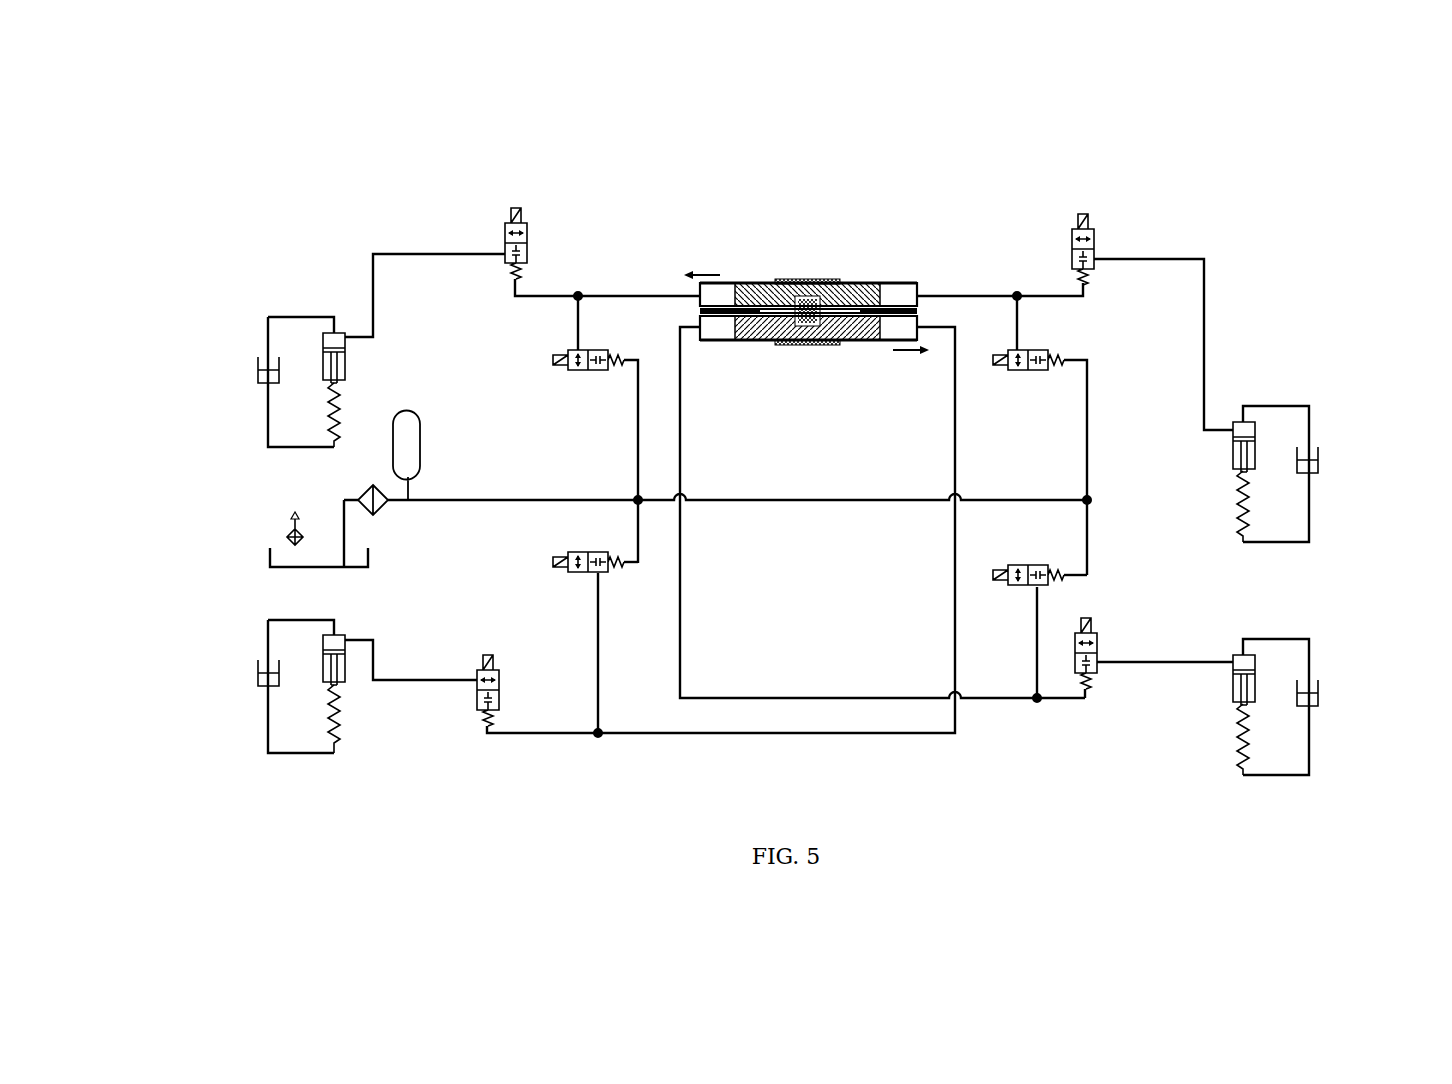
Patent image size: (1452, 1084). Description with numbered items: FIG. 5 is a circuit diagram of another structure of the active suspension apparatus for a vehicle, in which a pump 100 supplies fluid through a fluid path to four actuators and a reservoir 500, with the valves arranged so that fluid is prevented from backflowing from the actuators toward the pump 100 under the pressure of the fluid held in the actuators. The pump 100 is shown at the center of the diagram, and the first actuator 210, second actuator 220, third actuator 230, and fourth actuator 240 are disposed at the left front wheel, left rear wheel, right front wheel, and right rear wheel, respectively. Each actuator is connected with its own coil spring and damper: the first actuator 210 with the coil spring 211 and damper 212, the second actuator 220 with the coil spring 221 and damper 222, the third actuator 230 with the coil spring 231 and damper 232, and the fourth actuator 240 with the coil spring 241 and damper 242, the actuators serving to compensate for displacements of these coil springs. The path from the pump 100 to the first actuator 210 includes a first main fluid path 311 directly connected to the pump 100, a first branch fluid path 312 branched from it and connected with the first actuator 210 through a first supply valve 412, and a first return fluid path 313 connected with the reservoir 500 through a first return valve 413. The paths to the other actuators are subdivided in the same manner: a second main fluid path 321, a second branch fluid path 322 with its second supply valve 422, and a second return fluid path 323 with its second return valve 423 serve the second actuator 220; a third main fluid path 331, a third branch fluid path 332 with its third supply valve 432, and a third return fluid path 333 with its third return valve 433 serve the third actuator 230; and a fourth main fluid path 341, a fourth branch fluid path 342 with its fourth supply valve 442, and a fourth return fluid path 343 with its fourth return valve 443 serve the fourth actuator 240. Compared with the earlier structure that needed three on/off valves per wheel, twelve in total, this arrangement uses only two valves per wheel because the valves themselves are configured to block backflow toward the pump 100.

The pump 100 is at (710, 283).
The first actuator 210 is at (343, 333).
The coil spring 211 is at (328, 418).
The damper 212 is at (257, 372).
The second actuator 220 is at (343, 635).
The coil spring 221 is at (328, 722).
The damper 222 is at (257, 676).
The third actuator 230 is at (1256, 428).
The coil spring 231 is at (1260, 520).
The damper 232 is at (1312, 460).
The fourth actuator 240 is at (1256, 661).
The coil spring 241 is at (1260, 757).
The damper 242 is at (1312, 693).
The 1-1 fluid path 311 is at (645, 296).
The 1-2 fluid path 312 is at (415, 253).
The 1-3 fluid path 313 is at (548, 296).
The 2-1 fluid path 321 is at (770, 733).
The 2-2 fluid path 322 is at (422, 680).
The 2-3 fluid path 323 is at (596, 628).
The 3-1 fluid path 331 is at (958, 296).
The 3-2 fluid path 332 is at (1160, 259).
The 3-3 fluid path 333 is at (1020, 323).
The 4-1 fluid path 341 is at (1000, 698).
The 4-2 fluid path 342 is at (1180, 662).
The 4-3 fluid path 343 is at (1040, 600).
The 1-2 valve 412 is at (505, 222).
The 1-3 valve 413 is at (573, 372).
The 2-2 valve 422 is at (477, 705).
The 2-3 valve 423 is at (568, 553).
The 3-2 valve 432 is at (1094, 229).
The 3-3 valve 433 is at (1012, 372).
The 4-2 valve 442 is at (1097, 668).
The 4-3 valve 443 is at (1034, 563).
The reservoir 500 is at (291, 535).